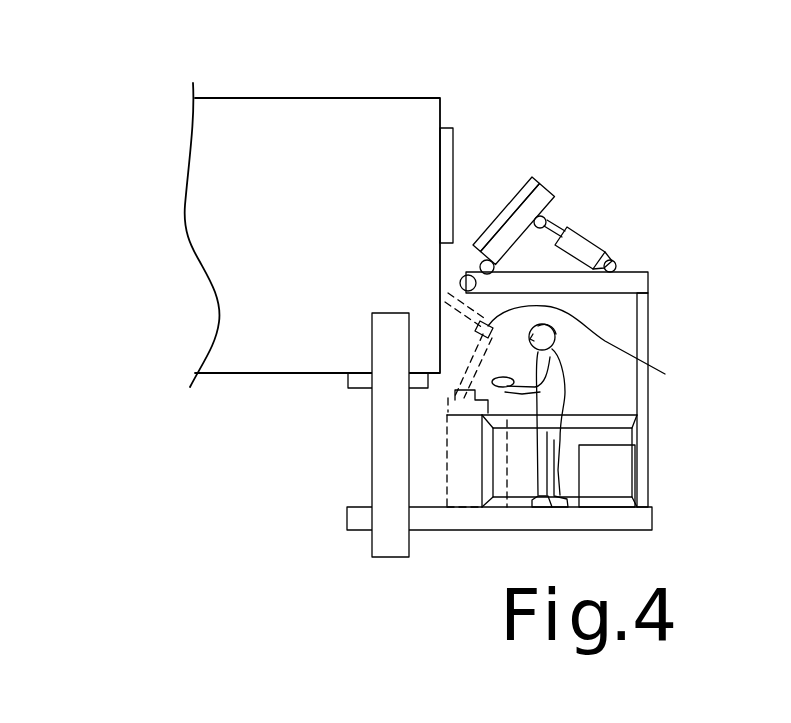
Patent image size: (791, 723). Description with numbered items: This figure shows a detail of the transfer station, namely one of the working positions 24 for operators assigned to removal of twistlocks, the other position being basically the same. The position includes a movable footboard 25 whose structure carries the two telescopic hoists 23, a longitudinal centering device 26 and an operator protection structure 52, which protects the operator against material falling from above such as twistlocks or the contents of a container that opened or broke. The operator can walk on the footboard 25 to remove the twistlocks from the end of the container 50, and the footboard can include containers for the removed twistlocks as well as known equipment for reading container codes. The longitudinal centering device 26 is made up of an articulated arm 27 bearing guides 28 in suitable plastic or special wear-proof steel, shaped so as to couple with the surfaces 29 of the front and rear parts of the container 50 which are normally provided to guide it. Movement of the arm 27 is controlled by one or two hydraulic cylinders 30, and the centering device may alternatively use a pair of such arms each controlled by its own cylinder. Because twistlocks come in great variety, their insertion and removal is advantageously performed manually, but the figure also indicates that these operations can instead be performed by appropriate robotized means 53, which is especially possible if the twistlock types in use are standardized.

The telescopic hoist 23 is at (372, 443).
The working position 24 is at (297, 571).
The movable footboard 25 is at (463, 531).
The longitudinal centering device 26 is at (578, 136).
The articulated arm 27 is at (553, 192).
The guides 28 is at (516, 187).
The container surfaces 29 is at (455, 163).
The hydraulic cylinder 30 is at (598, 238).
The container 50 is at (191, 268).
The operator protection structure 52 is at (660, 314).
The robotized means 53 is at (601, 356).